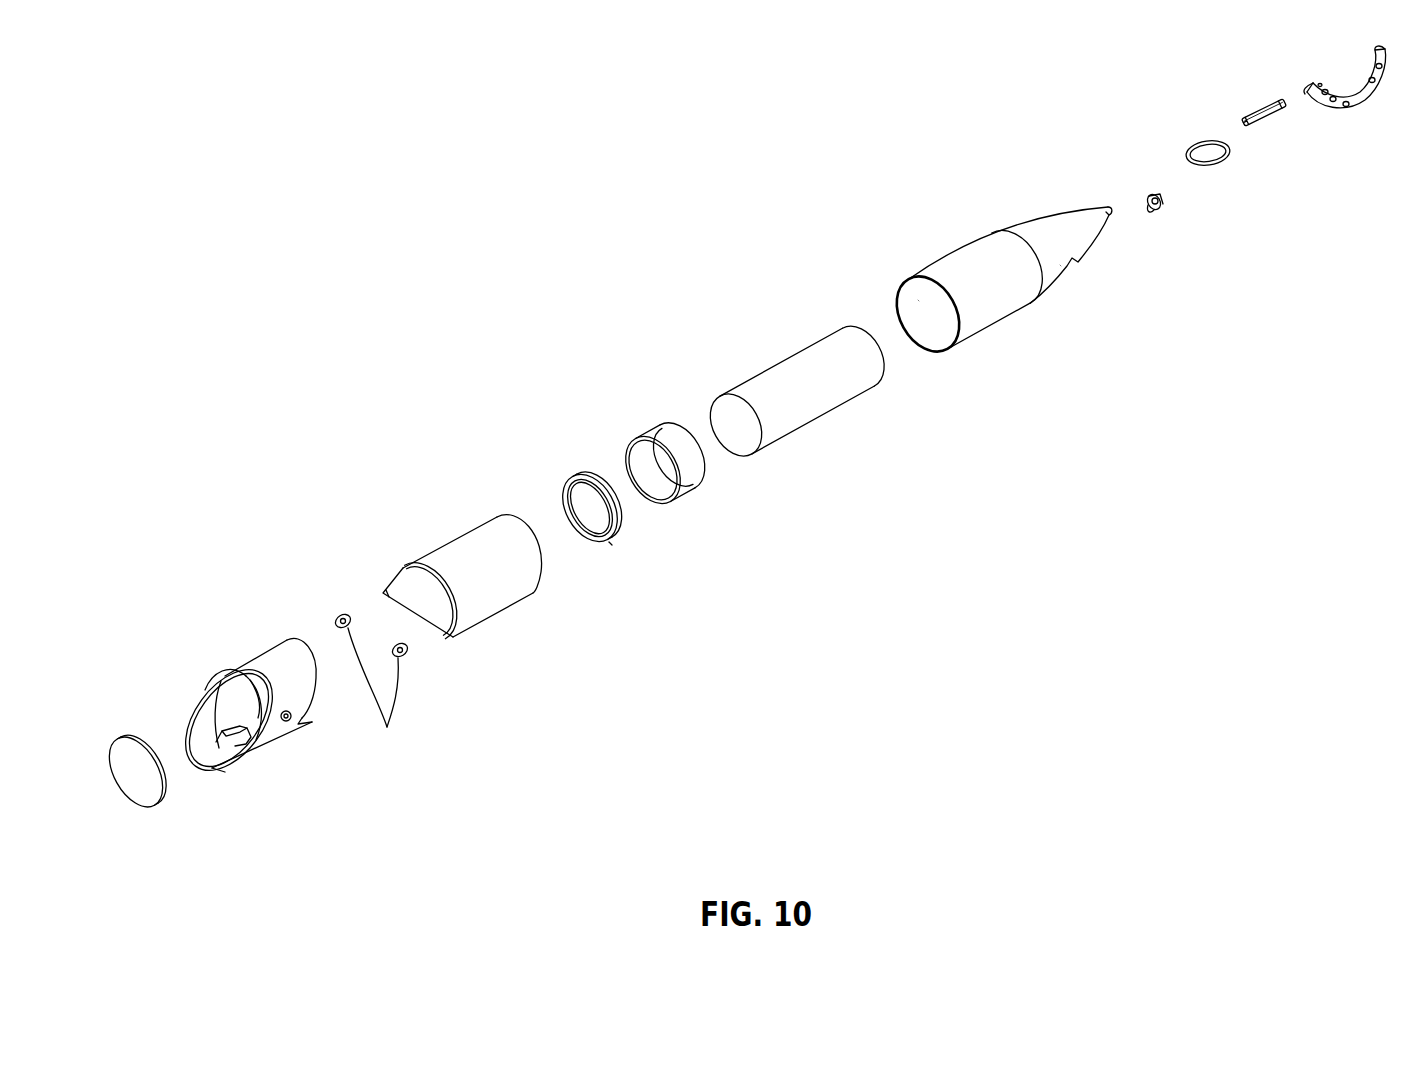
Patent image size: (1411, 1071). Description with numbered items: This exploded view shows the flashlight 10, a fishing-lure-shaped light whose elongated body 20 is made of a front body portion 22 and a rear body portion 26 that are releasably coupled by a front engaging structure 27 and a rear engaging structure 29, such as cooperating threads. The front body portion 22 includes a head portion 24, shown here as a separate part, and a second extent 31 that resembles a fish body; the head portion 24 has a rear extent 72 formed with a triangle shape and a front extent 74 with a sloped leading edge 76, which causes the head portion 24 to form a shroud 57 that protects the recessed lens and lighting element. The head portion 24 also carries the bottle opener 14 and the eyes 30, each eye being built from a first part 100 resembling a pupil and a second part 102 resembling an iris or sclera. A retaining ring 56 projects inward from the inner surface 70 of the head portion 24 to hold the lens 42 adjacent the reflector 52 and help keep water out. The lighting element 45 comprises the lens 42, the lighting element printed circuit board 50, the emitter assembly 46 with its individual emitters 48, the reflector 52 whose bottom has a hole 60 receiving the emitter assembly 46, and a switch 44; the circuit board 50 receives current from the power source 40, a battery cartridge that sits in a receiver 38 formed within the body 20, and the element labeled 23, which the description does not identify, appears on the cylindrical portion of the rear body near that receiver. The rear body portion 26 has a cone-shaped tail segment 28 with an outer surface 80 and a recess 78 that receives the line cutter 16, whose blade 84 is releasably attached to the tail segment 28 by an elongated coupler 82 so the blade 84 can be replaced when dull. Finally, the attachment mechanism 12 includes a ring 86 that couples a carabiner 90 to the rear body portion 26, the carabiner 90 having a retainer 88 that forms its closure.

The flashlight 10 is at (331, 133).
The attachment mechanism 12 is at (1322, 200).
The bottle opener 14 is at (230, 739).
The line cutter 16 is at (1168, 298).
The elongated body 20 is at (568, 331).
The front body portion 22 is at (253, 375).
The body housing 23 is at (987, 313).
The head portion 24 is at (168, 514).
The rear body portion 26 is at (910, 149).
The front engaging structure 27 is at (485, 508).
The tail segment 28 is at (1048, 218).
The rear engaging structure 29 is at (905, 268).
The eyes 30 is at (381, 689).
The second extent 31 is at (483, 608).
The receiver 38 is at (936, 316).
The power source 40 is at (802, 410).
The lens 42 is at (143, 790).
The switch 44 is at (610, 543).
The lighting element 45 is at (627, 646).
The emitter assembly 46 is at (595, 525).
The individual emitters 48 is at (589, 508).
The lighting element printed circuit board 50 is at (578, 480).
The reflector 52 is at (657, 435).
The retaining ring 56 is at (237, 687).
The shroud 57 is at (212, 638).
The hole 60 is at (665, 477).
The inner surface 70 is at (223, 697).
The rear extent 72 is at (313, 730).
The front extent 74 is at (227, 776).
The sloped leading edge 76 is at (200, 770).
The recess 78 is at (1068, 285).
The outer surface 80 is at (1065, 261).
The elongated coupler 82 is at (1147, 212).
The blade 84 is at (1157, 193).
The ring 86 is at (1203, 142).
The retainer 88 is at (1268, 117).
The carabiner 90 is at (1360, 97).
The first part of eye 100 is at (288, 720).
The second part of eye 102 is at (371, 669).